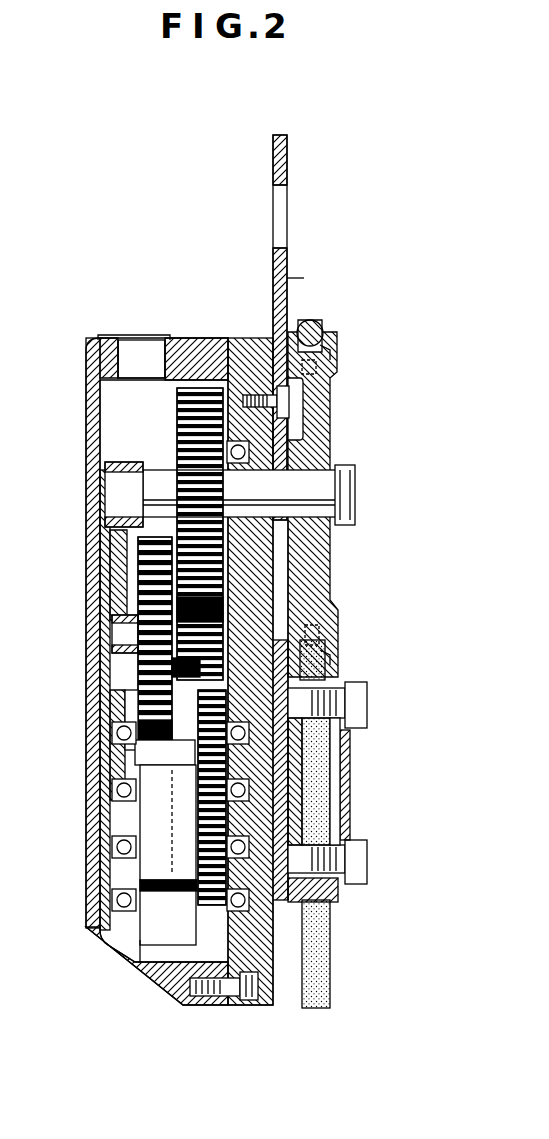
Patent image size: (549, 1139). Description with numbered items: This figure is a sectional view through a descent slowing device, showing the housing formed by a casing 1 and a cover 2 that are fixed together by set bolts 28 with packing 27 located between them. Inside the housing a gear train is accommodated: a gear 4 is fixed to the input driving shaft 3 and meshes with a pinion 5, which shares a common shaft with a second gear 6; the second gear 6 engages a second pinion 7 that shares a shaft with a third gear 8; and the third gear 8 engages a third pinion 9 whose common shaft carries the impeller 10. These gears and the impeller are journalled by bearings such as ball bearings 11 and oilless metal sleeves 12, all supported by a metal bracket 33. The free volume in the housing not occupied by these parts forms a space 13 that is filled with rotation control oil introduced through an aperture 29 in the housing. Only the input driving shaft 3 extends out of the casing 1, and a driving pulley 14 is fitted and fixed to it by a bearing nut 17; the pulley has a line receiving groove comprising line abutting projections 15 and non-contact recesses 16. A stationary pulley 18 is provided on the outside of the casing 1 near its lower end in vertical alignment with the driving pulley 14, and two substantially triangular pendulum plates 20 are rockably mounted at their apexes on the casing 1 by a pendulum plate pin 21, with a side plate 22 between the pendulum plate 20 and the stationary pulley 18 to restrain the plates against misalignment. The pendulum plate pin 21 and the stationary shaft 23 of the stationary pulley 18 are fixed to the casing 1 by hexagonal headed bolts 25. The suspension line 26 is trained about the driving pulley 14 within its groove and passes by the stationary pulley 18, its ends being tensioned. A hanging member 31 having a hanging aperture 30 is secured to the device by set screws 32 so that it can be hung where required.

The casing 1 is at (244, 1005).
The cover 2 is at (152, 975).
The input driving shaft 3 is at (285, 498).
The gear 4 is at (136, 550).
The pinion 5 is at (190, 682).
The second gear 6 is at (128, 704).
The second pinion 7 is at (132, 760).
The third gear 8 is at (200, 820).
The third pinion 9 is at (214, 905).
The impeller 10 is at (140, 943).
The ball bearings 11 is at (118, 735).
The oilless metal sleeves 12 is at (130, 470).
The space 13 is at (108, 420).
The driving pulley 14 is at (318, 405).
The line abutting projections 15 is at (325, 345).
The non-contact recesses 16 is at (316, 366).
The bearing nut 17 is at (352, 478).
The stationary pulley 18 is at (336, 900).
The pendulum plates 20 is at (325, 775).
The pendulum plate pin 21 is at (300, 760).
The side plate 22 is at (350, 800).
The stationary shaft 23 is at (340, 845).
The hexagonal headed bolts 25 is at (368, 690).
The suspension line 26 is at (318, 328).
The packing 27 is at (222, 1000).
The set bolts 28 is at (255, 985).
The aperture 29 is at (147, 352).
The hanging aperture 30 is at (288, 210).
The hanging member 31 is at (309, 272).
The set screws 32 is at (282, 420).
The metal bracket 33 is at (108, 583).